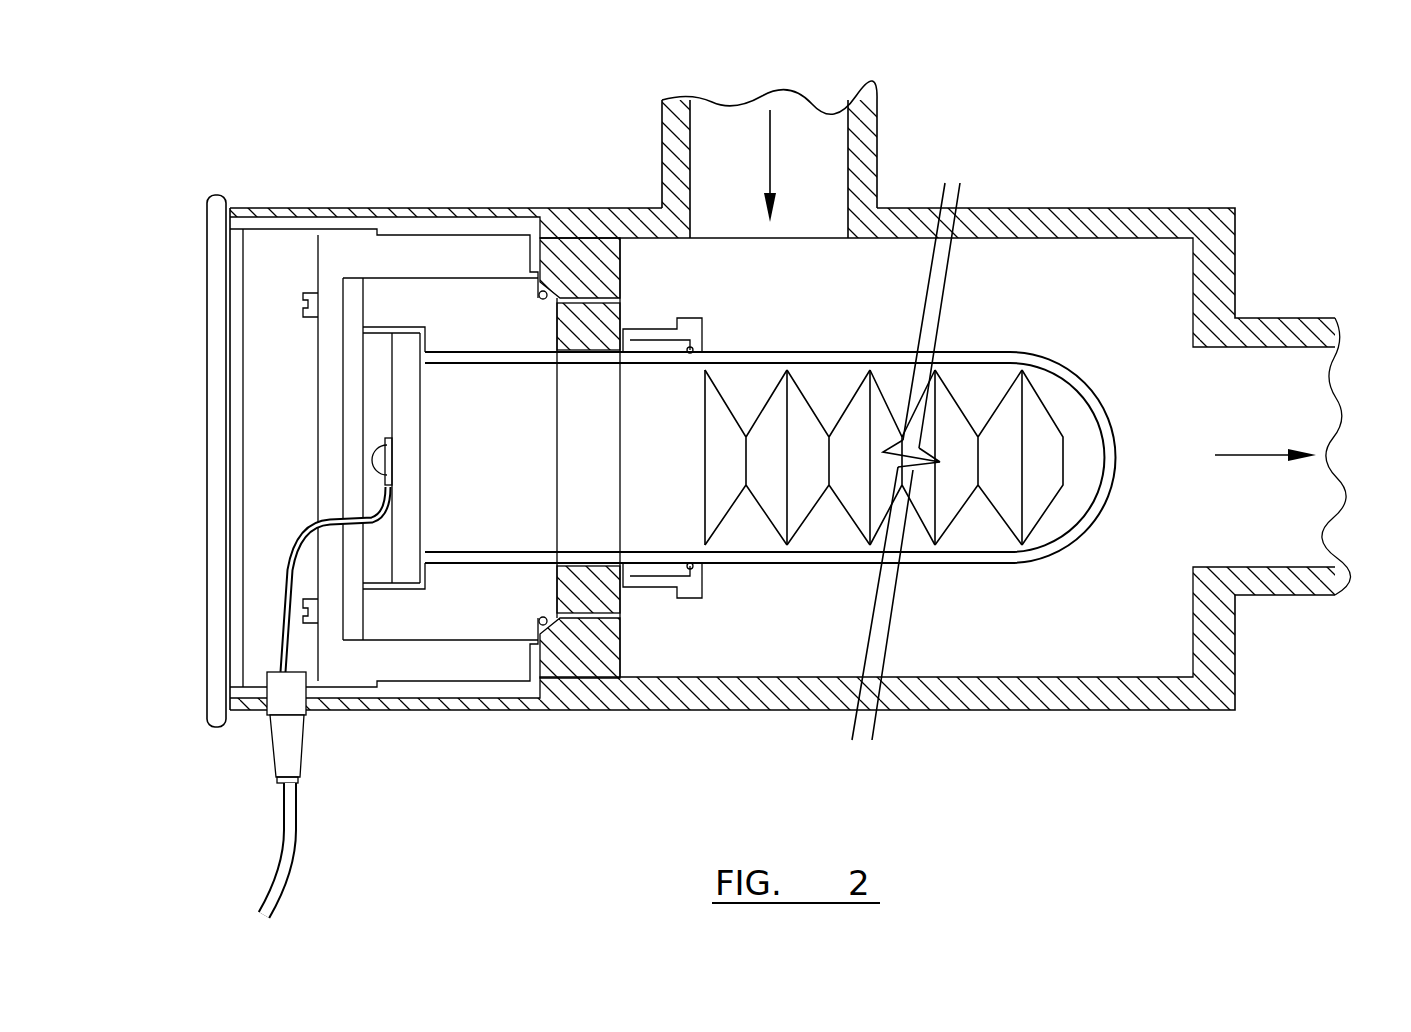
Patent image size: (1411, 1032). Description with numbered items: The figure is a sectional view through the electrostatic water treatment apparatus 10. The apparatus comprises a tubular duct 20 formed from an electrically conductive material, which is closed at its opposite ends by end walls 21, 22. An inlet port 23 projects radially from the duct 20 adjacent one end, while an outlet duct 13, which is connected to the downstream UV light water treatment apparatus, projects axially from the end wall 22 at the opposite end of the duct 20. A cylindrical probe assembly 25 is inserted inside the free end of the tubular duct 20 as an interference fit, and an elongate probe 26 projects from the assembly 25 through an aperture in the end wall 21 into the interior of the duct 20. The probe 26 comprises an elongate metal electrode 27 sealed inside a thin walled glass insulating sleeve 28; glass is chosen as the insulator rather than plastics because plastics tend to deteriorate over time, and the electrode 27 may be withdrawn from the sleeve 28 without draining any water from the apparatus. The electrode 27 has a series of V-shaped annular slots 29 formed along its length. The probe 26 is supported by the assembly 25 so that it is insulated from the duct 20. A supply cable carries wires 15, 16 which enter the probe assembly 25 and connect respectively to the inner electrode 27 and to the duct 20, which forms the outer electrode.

The electrostatic water treatment apparatus 10 is at (954, 718).
The outlet duct 13 is at (1270, 523).
The wire 15 is at (288, 553).
The wire 16 is at (292, 656).
The tubular duct 20 is at (1047, 208).
The end wall 21 is at (594, 678).
The end wall 22 is at (1236, 275).
The inlet port 23 is at (878, 137).
The cylindrical probe assembly 25 is at (481, 722).
The elongate probe 26 is at (1066, 563).
The elongate metal electrode 27 is at (1003, 430).
The thin walled glass insulating sleeve 28 is at (983, 557).
The V-shaped annular slots 29 is at (827, 383).